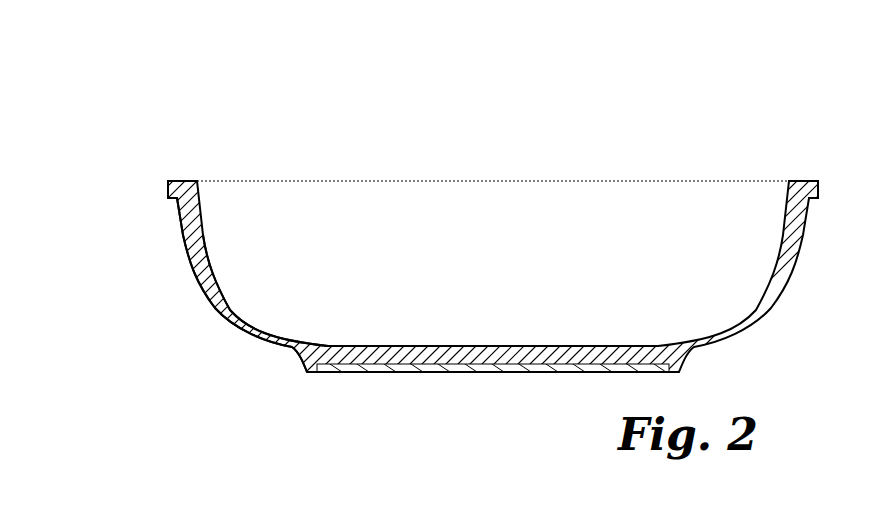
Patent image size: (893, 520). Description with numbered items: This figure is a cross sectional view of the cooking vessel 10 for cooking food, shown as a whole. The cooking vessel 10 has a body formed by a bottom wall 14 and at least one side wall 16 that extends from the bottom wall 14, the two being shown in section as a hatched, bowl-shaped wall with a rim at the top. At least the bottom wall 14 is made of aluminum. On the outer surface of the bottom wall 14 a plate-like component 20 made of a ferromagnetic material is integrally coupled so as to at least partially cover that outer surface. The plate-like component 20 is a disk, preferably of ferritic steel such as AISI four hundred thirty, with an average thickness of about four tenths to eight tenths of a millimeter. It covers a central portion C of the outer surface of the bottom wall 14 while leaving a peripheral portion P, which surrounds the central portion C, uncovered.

The cooking vessel 10 is at (167, 109).
The side wall 16 is at (190, 242).
The bottom wall 14 is at (557, 348).
The plate-like component 20 is at (515, 366).
The central portion C is at (437, 345).
The peripheral portion P is at (308, 376).